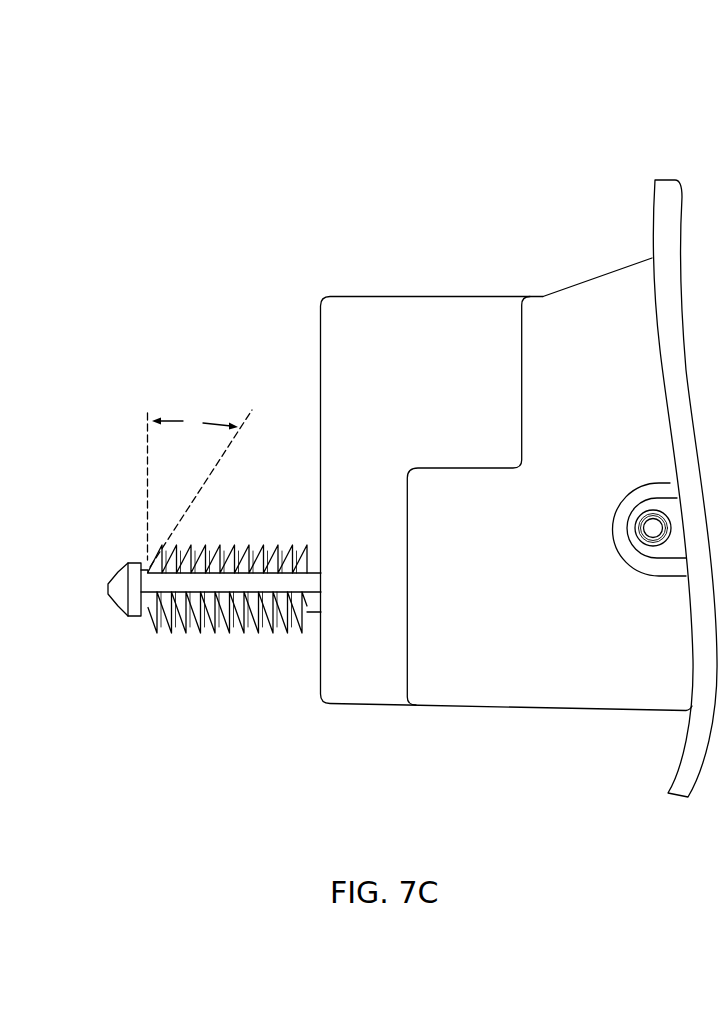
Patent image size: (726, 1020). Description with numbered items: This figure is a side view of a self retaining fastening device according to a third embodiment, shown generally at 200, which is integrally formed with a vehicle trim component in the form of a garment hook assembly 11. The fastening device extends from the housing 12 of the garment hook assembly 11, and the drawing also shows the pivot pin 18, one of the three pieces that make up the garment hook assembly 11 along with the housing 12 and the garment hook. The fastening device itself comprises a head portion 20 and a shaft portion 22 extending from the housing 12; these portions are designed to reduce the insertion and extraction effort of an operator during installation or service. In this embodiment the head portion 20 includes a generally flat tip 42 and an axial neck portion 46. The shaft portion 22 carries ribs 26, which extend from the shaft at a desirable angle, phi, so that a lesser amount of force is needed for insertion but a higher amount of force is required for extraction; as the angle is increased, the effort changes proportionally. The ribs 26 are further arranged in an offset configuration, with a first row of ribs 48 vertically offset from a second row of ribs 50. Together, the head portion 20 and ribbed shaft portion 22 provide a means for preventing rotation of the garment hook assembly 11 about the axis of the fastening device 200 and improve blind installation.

The garment hook assembly 11 is at (484, 152).
The housing 12 is at (425, 295).
The pivot pin 18 is at (653, 530).
The head portion 20 is at (130, 555).
The shaft portion 22 is at (257, 479).
The ribs 26 is at (183, 631).
The flat tip 42 is at (102, 587).
The axial neck portion 46 is at (137, 607).
The first row of ribs 48 is at (308, 547).
The second row of ribs 50 is at (303, 640).
The self retaining fastening device 200 is at (210, 312).